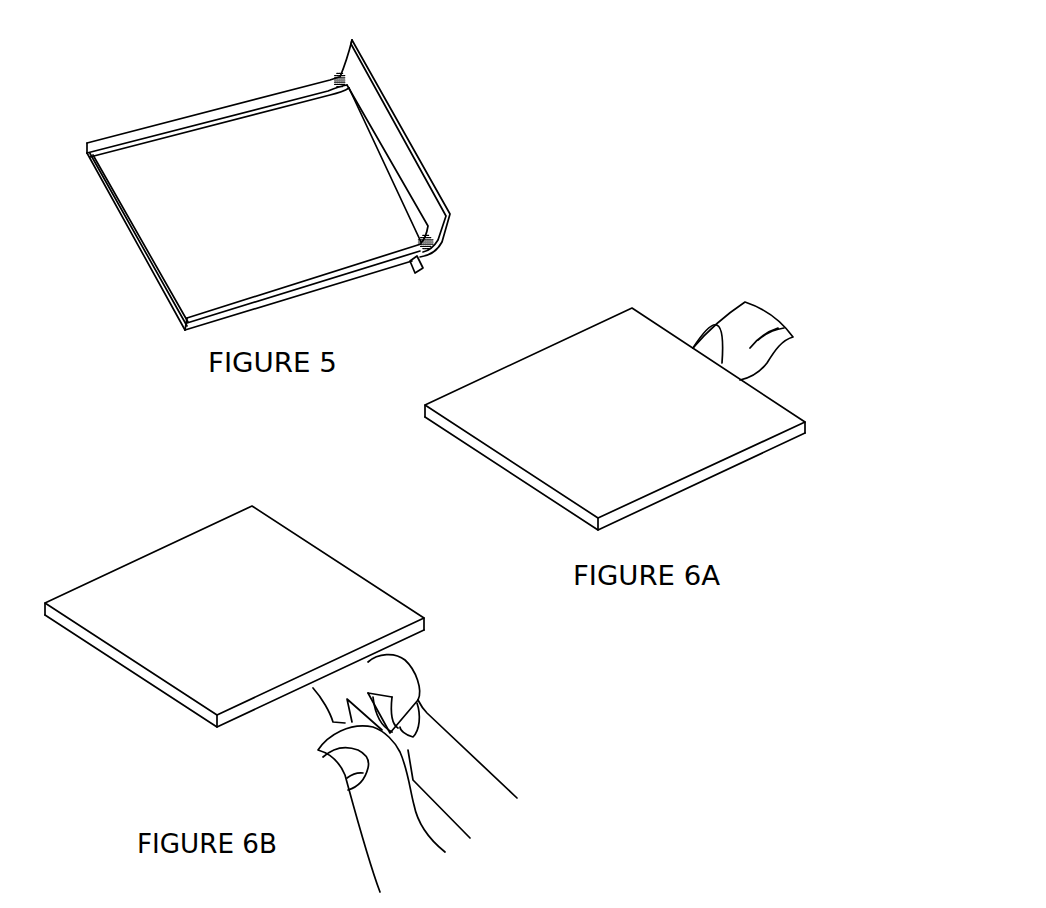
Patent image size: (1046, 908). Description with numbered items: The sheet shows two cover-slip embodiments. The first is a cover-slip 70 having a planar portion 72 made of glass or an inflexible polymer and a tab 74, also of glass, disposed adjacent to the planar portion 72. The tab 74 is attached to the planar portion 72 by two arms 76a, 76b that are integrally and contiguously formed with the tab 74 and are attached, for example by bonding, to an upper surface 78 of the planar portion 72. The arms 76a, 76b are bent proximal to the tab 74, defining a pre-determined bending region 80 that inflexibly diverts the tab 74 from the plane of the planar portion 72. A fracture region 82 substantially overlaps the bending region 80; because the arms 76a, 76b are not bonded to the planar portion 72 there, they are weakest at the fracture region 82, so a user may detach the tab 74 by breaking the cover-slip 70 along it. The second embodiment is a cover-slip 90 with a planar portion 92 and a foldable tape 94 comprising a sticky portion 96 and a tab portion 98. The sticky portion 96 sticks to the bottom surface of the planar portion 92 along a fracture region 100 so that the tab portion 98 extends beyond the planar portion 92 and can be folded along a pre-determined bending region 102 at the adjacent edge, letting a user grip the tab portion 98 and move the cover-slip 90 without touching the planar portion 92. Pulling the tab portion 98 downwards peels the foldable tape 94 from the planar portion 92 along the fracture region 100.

In FIG. 5, the cover-slip 70 is at (175, 62).
In FIG. 5, the planar portion 72 is at (137, 212).
In FIG. 5, the tab 74 is at (400, 142).
In FIG. 5, the arm 76a is at (155, 132).
In FIG. 5, the arm 76b is at (267, 290).
In FIG. 5, the upper surface 78 is at (183, 277).
In FIG. 5, the pre-determined bending region 80 is at (338, 77).
In FIG. 5, the fracture region 82 is at (417, 247).
In FIG. 6A, the cover-slip 90 is at (825, 372).
In FIG. 6B, the cover-slip 90 is at (141, 528).
In FIG. 6A, the planar portion 92 is at (517, 449).
In FIG. 6B, the planar portion 92 is at (140, 649).
In FIG. 6A, the foldable tape 94 is at (752, 296).
In FIG. 6B, the foldable tape 94 is at (368, 695).
In FIG. 6B, the sticky portion 96 is at (399, 660).
In FIG. 6A, the tab portion 98 is at (742, 324).
In FIG. 6B, the tab portion 98 is at (414, 715).
In FIG. 6B, the fracture region 100 is at (385, 654).
In FIG. 6A, the pre-determined bending region 102 is at (716, 328).